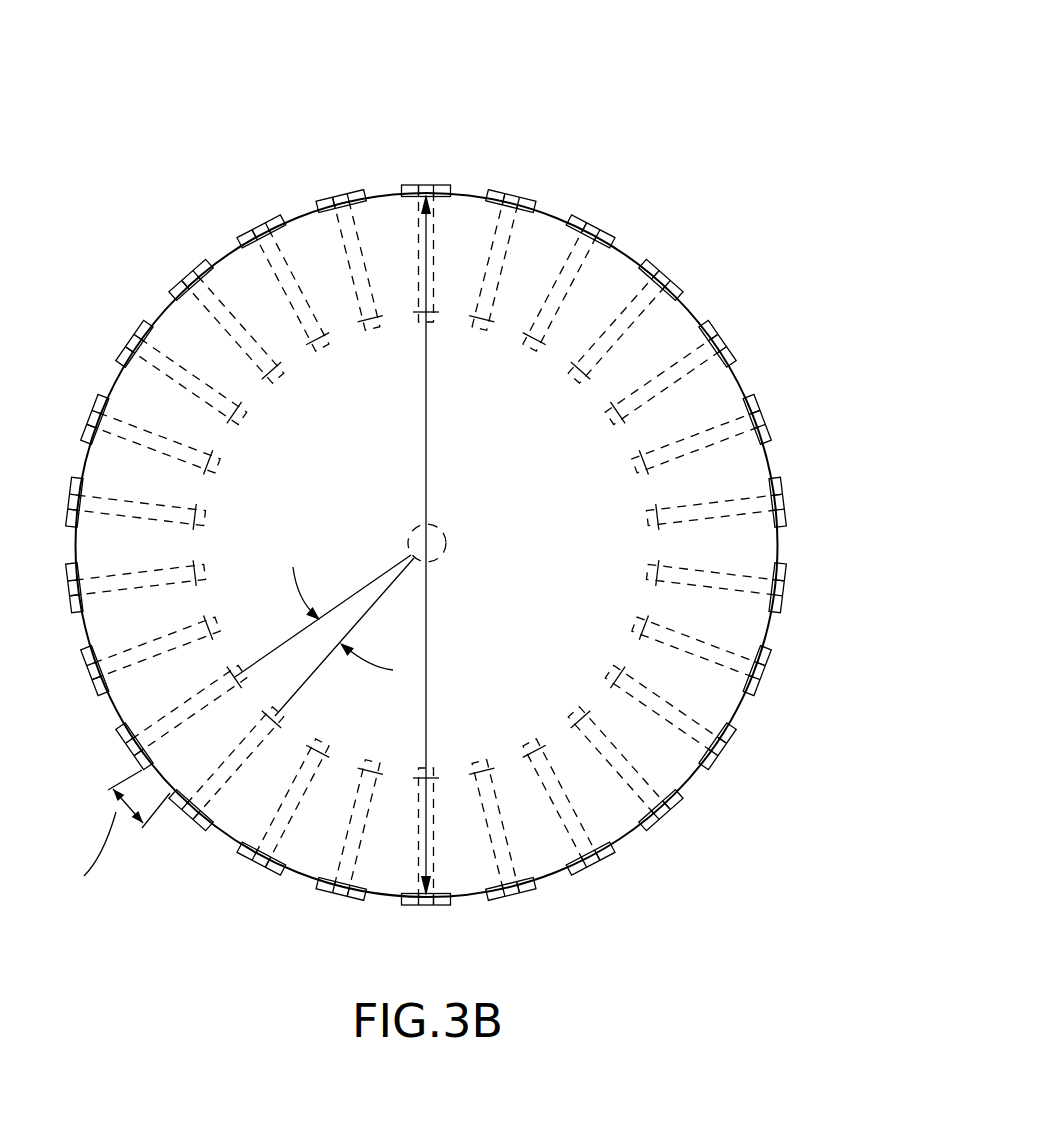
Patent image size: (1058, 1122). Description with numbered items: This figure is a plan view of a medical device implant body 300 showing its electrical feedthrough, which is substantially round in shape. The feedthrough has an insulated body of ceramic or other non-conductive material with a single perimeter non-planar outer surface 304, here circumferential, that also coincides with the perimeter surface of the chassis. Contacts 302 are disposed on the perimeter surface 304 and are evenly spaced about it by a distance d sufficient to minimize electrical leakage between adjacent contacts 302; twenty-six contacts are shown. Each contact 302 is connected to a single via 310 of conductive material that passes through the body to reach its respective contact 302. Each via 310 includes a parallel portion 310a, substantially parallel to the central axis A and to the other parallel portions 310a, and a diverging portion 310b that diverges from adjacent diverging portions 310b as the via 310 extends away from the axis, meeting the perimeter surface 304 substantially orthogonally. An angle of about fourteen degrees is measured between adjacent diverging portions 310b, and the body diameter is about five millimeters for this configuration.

The medical device implant body 300 is at (645, 103).
The contacts 302 is at (786, 521).
The perimeter non-planar outer surface 304 is at (782, 638).
The via 310 is at (436, 808).
The parallel portion 310a is at (212, 453).
The diverging portion 310b is at (180, 460).